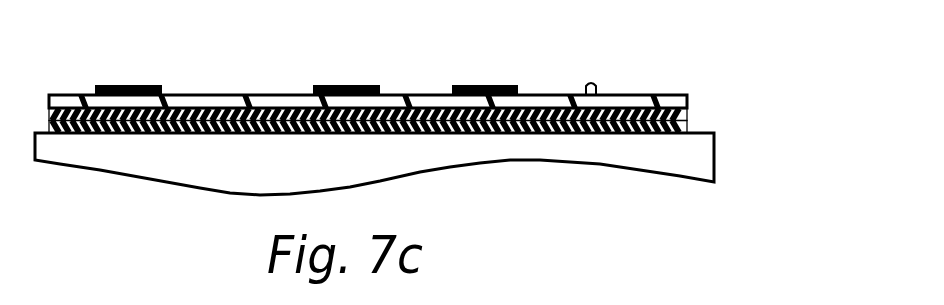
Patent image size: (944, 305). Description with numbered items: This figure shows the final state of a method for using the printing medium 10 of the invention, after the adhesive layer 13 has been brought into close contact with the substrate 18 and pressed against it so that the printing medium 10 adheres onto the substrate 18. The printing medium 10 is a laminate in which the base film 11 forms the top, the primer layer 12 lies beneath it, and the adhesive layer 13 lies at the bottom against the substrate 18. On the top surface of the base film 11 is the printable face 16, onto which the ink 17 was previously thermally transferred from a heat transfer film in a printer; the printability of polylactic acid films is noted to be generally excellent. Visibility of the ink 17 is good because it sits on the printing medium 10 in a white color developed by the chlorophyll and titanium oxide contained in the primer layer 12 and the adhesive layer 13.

The printing medium 10 is at (430, 88).
The base film 11 is at (688, 99).
The primer layer 12 is at (688, 112).
The adhesive layer 13 is at (688, 125).
The printable face 16 is at (593, 95).
The ink 17 is at (519, 84).
The substrate 18 is at (712, 170).